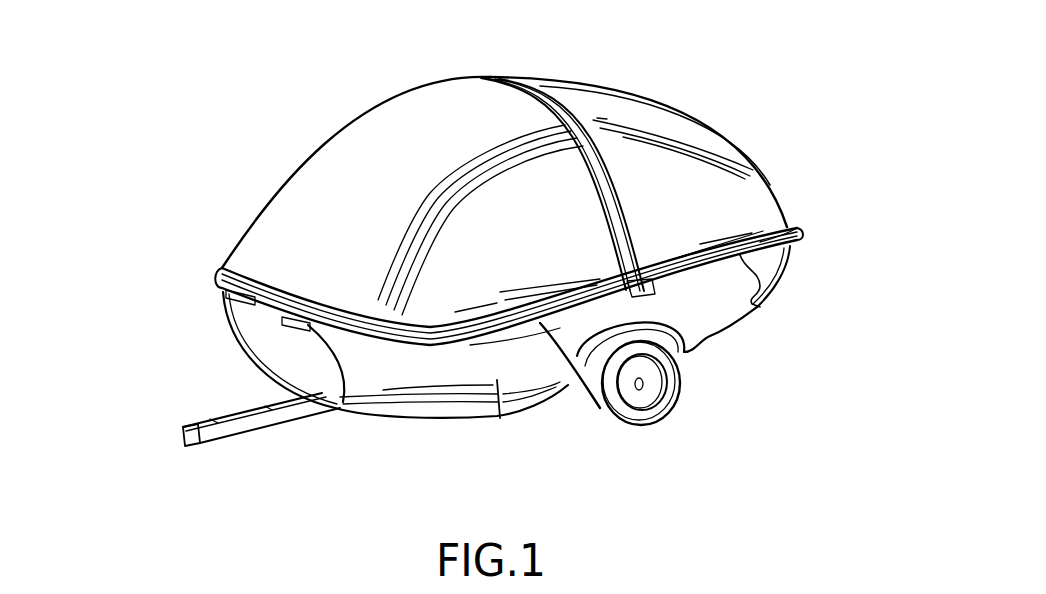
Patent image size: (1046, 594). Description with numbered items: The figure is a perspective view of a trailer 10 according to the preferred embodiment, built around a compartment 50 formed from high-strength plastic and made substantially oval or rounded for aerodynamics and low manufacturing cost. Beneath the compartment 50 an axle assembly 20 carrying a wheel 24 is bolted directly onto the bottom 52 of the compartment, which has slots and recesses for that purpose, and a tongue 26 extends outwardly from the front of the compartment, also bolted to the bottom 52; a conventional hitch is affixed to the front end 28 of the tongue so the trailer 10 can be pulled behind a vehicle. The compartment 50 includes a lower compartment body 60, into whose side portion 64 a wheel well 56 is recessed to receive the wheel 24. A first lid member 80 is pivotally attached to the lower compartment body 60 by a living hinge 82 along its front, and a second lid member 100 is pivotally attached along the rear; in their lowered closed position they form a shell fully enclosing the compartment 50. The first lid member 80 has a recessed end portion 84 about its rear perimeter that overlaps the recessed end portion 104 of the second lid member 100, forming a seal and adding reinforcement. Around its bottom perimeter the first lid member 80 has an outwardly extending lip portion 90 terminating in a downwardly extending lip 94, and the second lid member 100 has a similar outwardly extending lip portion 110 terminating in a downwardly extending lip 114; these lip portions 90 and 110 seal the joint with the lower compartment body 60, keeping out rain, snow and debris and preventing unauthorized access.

The trailer 10 is at (521, 264).
The axle assembly 20 is at (681, 432).
The wheel 24 is at (654, 421).
The tongue 26 is at (273, 413).
The front end of the tongue 28 is at (183, 433).
The compartment 50 is at (225, 293).
The bottom of the compartment 52 is at (420, 420).
The wheel well 56 is at (687, 350).
The lower compartment body 60 is at (497, 418).
The side portion of the lower compartment body 64 is at (700, 323).
The first lid member 80 is at (328, 143).
The living hinge 82 is at (317, 408).
The recessed end portion 84 is at (608, 221).
The outwardly extending lip portion 90 is at (533, 330).
The downwardly extending lip 94 is at (583, 402).
The second lid member 100 is at (650, 117).
The recessed end portion 104 is at (540, 100).
The outwardly extending lip portion 110 is at (791, 243).
The downwardly extending lip 114 is at (753, 302).